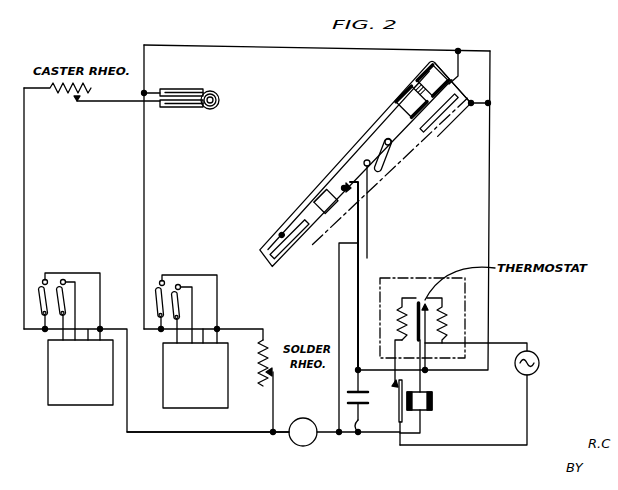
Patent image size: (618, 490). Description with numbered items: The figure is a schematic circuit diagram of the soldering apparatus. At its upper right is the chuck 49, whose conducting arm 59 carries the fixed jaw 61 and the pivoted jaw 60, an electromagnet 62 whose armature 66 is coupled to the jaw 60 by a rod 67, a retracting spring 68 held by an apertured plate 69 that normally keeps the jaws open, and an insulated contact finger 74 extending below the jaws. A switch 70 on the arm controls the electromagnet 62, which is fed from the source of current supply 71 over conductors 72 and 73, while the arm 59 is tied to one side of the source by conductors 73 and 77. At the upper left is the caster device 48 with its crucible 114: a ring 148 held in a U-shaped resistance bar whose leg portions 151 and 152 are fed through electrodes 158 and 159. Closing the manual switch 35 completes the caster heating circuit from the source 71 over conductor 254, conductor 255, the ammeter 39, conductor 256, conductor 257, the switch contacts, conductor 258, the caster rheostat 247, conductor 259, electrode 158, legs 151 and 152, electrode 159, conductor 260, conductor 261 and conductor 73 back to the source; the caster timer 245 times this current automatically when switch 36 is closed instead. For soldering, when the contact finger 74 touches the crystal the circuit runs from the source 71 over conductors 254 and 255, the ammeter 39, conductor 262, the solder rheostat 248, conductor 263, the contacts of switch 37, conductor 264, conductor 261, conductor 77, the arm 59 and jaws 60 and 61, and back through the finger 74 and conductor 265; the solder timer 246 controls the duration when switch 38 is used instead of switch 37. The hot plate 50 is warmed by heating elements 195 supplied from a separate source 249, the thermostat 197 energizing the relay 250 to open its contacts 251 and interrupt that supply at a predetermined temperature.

The switch 35 is at (42, 274).
The switch 36 is at (64, 276).
The switch 37 is at (161, 278).
The switch 38 is at (172, 283).
The ammeter 39 is at (293, 441).
The caster device 48 is at (223, 97).
The chuck 49 is at (421, 152).
The hot plate 50 is at (466, 295).
The arm 59 is at (387, 180).
The jaw 60 is at (348, 153).
The jaw 61 is at (298, 238).
The electromagnet 62 is at (441, 78).
The armature 66 is at (447, 113).
The rod 67 is at (464, 92).
The retracting spring 68 is at (342, 185).
The apertured plate 69 is at (327, 192).
The switch 70 is at (380, 147).
The source of current supply 71 is at (361, 409).
The conductor 72 is at (338, 300).
The conductor 73 is at (489, 212).
The contact finger 74 is at (320, 200).
The conductor 77 is at (491, 105).
The crucible 114 is at (222, 93).
The ring 148 is at (222, 103).
The leg portion 151 is at (200, 108).
The leg portion 152 is at (196, 92).
The electrode 158 is at (180, 108).
The electrode 159 is at (180, 88).
The heating element 195 is at (402, 308).
The thermostat 197 is at (423, 342).
The caster timer 245 is at (80, 406).
The solder timer 246 is at (180, 406).
The caster rheostat 247 is at (62, 95).
The solder rheostat 248 is at (264, 340).
The source 249 is at (540, 363).
The relay 250 is at (433, 402).
The contacts 251 is at (394, 385).
The conductor 254 is at (358, 436).
The conductor 255 is at (323, 434).
The conductor 256 is at (193, 432).
The conductor 257 is at (88, 272).
The conductor 258 is at (25, 200).
The conductor 259 is at (108, 101).
The conductor 260 is at (153, 90).
The conductor 261 is at (198, 46).
The conductor 262 is at (277, 387).
The conductor 263 is at (233, 329).
The conductor 264 is at (145, 160).
The conductor 265 is at (362, 256).